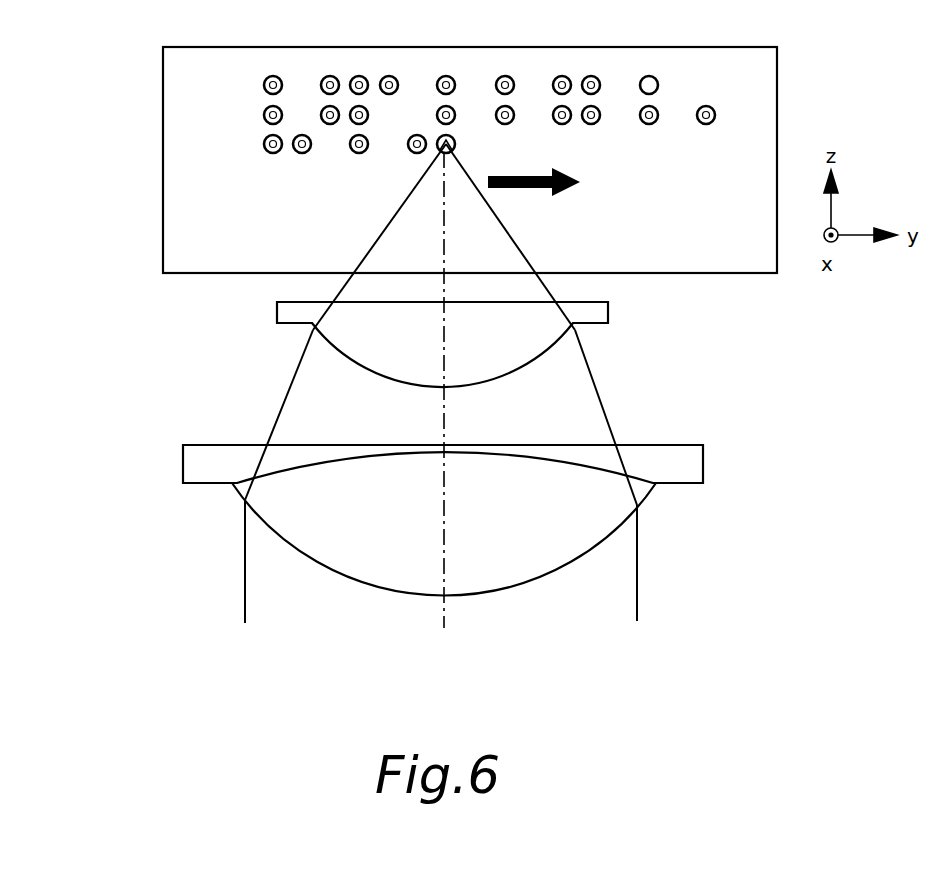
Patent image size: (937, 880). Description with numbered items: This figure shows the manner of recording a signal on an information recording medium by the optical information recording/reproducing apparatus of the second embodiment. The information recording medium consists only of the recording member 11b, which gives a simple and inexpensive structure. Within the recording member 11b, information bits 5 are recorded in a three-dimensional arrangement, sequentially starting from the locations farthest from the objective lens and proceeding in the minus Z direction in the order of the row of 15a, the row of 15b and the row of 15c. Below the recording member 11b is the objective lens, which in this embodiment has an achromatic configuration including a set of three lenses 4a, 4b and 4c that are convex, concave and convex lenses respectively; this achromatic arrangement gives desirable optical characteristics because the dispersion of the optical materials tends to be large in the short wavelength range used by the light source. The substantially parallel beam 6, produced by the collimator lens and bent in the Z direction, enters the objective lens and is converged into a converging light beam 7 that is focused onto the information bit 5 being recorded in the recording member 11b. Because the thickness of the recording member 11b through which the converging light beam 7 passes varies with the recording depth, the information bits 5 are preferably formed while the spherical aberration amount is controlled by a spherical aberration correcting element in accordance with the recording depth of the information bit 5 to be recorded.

The recording member 11b is at (208, 212).
The row of information bits 15a is at (240, 83).
The row of information bits 15b is at (240, 115).
The row of information bits 15c is at (238, 144).
The information bit 5 is at (455, 143).
The converging light beam 7 is at (390, 246).
The convex lens 4a is at (537, 332).
The concave lens 4b is at (588, 517).
The convex lens 4c is at (657, 467).
The parallel beam 6 is at (285, 595).